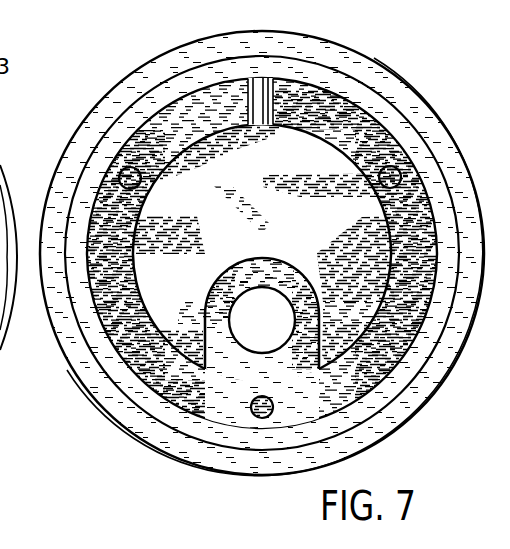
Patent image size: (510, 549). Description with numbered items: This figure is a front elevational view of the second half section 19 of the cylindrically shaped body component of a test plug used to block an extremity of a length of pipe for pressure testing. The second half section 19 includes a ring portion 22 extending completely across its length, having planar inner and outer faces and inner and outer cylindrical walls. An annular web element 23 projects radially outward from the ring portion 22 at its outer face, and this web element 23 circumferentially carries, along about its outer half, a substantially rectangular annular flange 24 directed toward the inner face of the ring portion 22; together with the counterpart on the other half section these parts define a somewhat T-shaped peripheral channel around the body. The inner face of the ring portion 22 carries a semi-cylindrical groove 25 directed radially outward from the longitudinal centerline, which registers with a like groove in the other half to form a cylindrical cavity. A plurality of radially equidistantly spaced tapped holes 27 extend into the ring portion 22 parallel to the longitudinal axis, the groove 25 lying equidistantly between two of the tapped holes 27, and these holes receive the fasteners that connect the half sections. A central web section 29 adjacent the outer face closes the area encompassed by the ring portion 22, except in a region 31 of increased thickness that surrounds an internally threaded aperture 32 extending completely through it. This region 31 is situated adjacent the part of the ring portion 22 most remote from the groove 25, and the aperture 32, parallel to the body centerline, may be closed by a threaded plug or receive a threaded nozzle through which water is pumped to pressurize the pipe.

The second half section 19 is at (72, 142).
The ring portion 22 is at (362, 128).
The annular web element 23 is at (108, 367).
The annular flange 24 is at (423, 120).
The semi-cylindrical groove 25 is at (260, 97).
The tapped holes 27 is at (120, 170).
The central web section 29 is at (188, 270).
The region of increased thickness 31 is at (303, 350).
The internally threaded aperture 32 is at (294, 312).